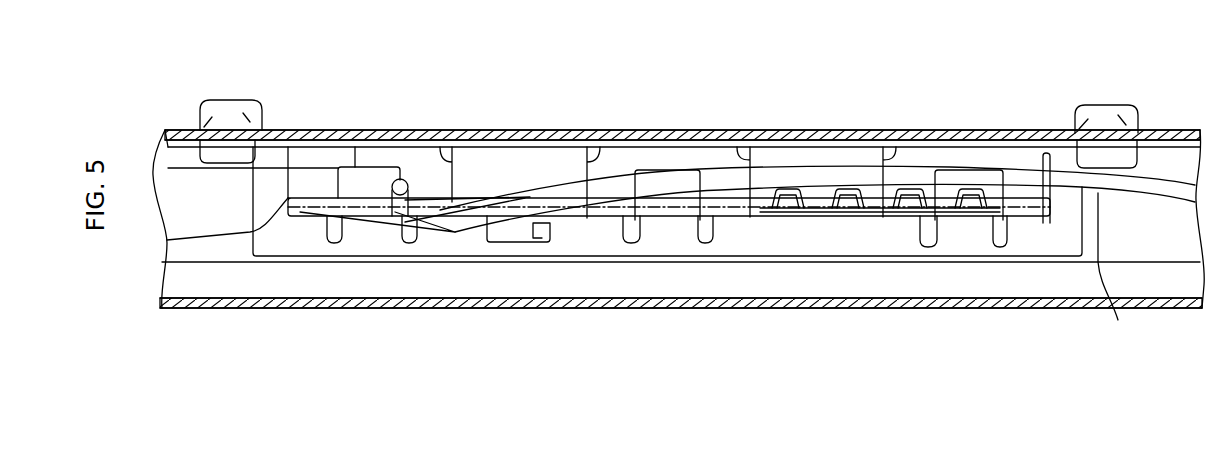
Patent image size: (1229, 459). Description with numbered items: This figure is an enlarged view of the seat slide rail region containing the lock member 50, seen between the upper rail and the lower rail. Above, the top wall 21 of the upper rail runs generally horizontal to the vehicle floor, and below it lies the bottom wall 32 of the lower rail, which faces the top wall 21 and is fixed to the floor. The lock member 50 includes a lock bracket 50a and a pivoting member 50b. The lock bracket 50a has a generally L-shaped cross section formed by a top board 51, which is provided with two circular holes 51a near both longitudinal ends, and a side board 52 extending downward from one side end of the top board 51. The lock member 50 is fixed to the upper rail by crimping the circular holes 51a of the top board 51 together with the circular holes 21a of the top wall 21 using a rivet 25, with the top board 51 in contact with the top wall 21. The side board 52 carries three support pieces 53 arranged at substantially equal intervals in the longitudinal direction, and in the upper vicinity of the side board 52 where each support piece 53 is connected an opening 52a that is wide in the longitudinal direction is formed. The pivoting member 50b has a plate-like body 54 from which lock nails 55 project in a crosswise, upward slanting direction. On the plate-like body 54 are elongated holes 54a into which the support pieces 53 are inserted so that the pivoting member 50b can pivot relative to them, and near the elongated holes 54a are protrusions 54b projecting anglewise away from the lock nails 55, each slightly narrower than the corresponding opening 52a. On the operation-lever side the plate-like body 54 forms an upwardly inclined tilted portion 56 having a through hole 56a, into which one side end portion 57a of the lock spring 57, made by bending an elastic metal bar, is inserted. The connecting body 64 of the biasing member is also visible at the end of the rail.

The top wall 21 is at (1023, 130).
The circular holes 21a is at (265, 107).
The rivet 25 is at (222, 102).
The bottom wall 32 is at (515, 308).
The lock member 50 is at (528, 85).
The lock bracket 50a is at (832, 118).
The pivoting member 50b is at (850, 232).
The top board 51 is at (733, 130).
The circular holes 51a is at (197, 118).
The side board 52 is at (752, 160).
The opening 52a is at (440, 147).
The support pieces 53 is at (355, 147).
The plate-like body 54 is at (737, 310).
The elongated holes 54a is at (323, 307).
The protrusions 54b is at (437, 303).
The lock nails 55 is at (753, 220).
The tilted portion 56 is at (338, 167).
The through hole 56a is at (378, 310).
The lock spring 57 is at (1118, 320).
The one side end portion 57a is at (400, 179).
The connecting body 64 is at (195, 240).